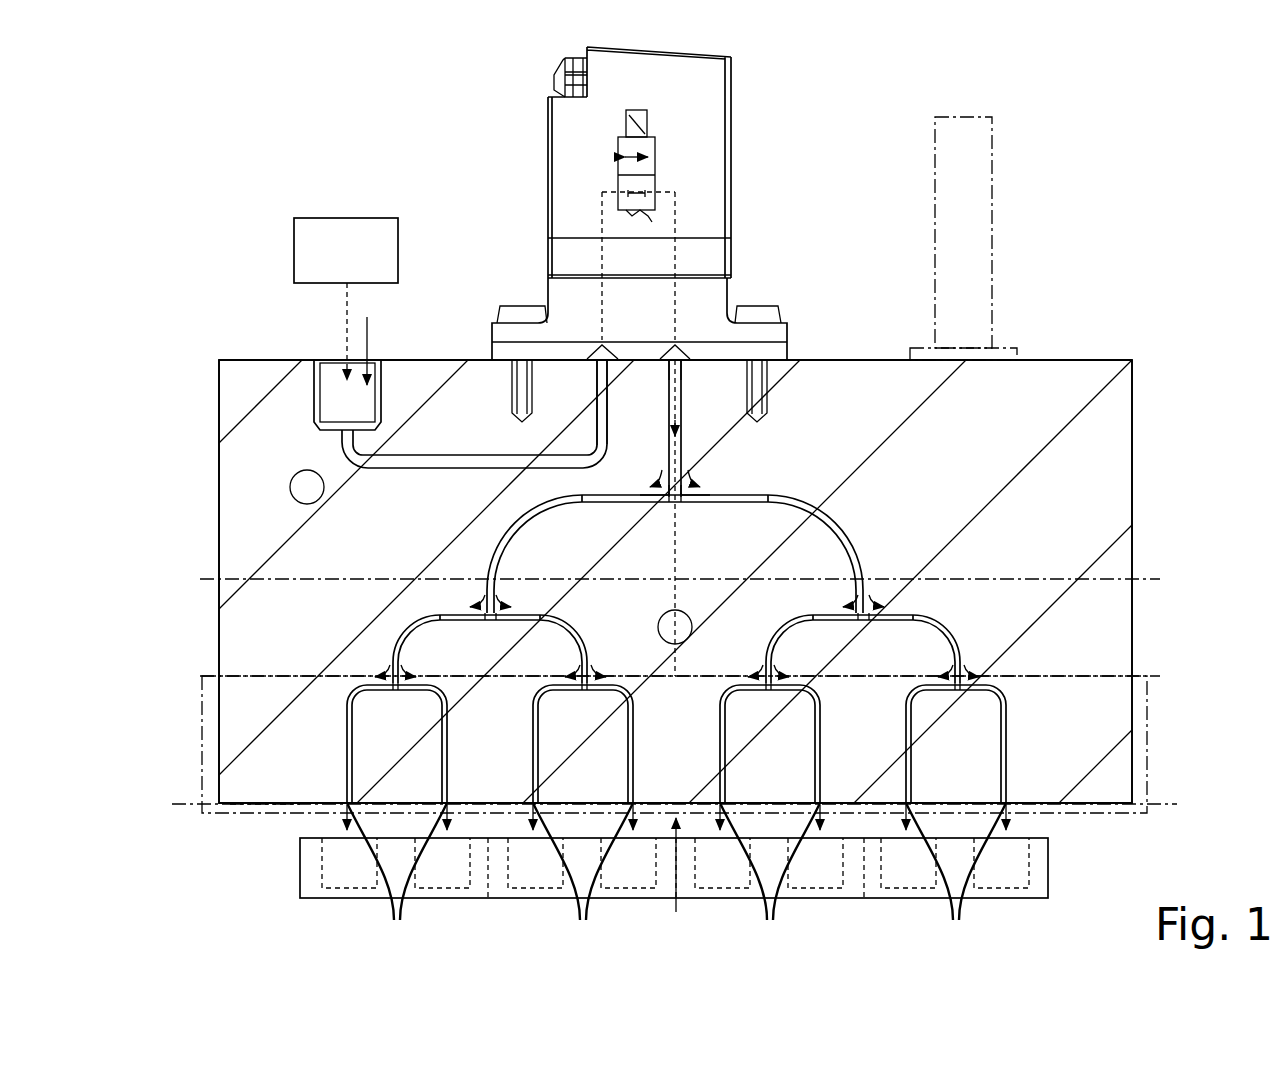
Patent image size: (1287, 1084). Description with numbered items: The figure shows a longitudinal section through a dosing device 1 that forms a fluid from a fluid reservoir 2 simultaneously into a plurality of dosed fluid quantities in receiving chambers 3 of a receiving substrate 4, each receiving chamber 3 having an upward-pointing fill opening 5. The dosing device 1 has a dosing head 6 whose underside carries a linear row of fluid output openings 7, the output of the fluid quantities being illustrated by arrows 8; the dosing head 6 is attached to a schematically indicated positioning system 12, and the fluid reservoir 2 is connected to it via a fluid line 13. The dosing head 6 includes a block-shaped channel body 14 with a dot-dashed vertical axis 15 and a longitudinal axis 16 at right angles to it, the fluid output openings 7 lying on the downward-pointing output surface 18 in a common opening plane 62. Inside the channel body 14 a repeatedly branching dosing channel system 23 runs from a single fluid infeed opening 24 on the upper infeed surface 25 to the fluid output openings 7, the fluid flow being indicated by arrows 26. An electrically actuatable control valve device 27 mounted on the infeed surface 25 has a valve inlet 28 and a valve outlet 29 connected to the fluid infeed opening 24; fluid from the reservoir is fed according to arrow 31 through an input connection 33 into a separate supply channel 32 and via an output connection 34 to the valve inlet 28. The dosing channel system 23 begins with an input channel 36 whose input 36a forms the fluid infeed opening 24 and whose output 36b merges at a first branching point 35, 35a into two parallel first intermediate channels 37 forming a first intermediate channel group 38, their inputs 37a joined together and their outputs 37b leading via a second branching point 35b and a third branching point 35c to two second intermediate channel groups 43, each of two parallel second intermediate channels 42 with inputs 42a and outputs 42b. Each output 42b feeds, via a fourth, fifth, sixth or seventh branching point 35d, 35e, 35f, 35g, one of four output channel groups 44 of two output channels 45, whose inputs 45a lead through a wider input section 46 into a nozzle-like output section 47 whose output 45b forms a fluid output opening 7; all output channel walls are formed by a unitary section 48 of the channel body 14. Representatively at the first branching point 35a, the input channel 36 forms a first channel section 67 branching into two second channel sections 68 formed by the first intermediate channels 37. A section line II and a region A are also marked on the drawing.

The dosing device 1 is at (852, 186).
The fluid reservoir 2 is at (380, 250).
The receiving chambers 3 is at (343, 884).
The receiving substrate 4 is at (1042, 884).
The fill opening 5 is at (1022, 842).
The dosing head 6 is at (1100, 358).
The fluid output openings 7 is at (678, 876).
The arrows 8 is at (342, 824).
The positioning system 12 is at (982, 188).
The fluid line 13 is at (344, 324).
The channel body 14 is at (1125, 478).
The vertical axis 15 is at (688, 637).
The longitudinal axis 16 is at (758, 575).
The output surface 18 is at (236, 806).
The dosing channel system 23 is at (872, 548).
The fluid infeed opening 24 is at (763, 330).
The infeed surface 25 is at (866, 358).
The arrows 26 is at (665, 458).
The control valve device 27 is at (710, 148).
The valve inlet 28 is at (601, 350).
The valve outlet 29 is at (673, 352).
The arrow 31 is at (370, 336).
The supply channel 32 is at (422, 460).
The input connection 33 is at (332, 398).
The output connection 34 is at (602, 370).
The branching points 35 is at (676, 625).
The first branching point 35a is at (673, 505).
The second branching point 35b is at (490, 622).
The third branching point 35c is at (863, 622).
The fourth branching point 35d is at (396, 692).
The fifth branching point 35e is at (584, 692).
The sixth branching point 35f is at (769, 692).
The seventh branching point 35g is at (957, 692).
The input channel 36 is at (685, 403).
The input of input channel 36a is at (682, 372).
The output of input channel 36b is at (690, 490).
The first intermediate channels 37 is at (692, 507).
The inputs of first intermediate channels 37a is at (655, 506).
The outputs of first intermediate channels 37b is at (482, 602).
The first intermediate channel group 38 is at (814, 498).
The second intermediate channels 42 is at (674, 592).
The inputs of second intermediate channels 42a is at (470, 623).
The outputs of second intermediate channels 42b is at (392, 662).
The second intermediate channel groups 43 is at (432, 609).
The output channel groups 44 is at (659, 703).
The output channels 45 is at (676, 751).
The inputs of output channels 45a is at (360, 693).
The outputs of output channels 45b is at (676, 861).
The input section 46 is at (345, 738).
The output section 47 is at (345, 776).
The unitary section 48 is at (1120, 716).
The opening plane 62 is at (182, 810).
The first channel section 67 is at (681, 462).
The second channel sections 68 is at (732, 494).
The detail area A is at (262, 812).
The section line II is at (676, 882).